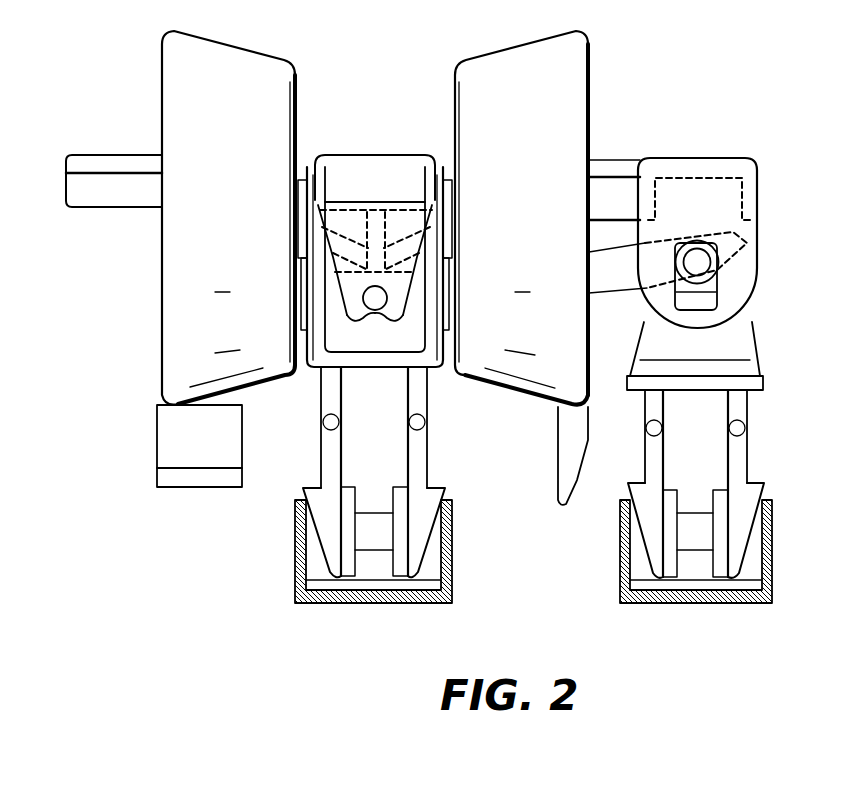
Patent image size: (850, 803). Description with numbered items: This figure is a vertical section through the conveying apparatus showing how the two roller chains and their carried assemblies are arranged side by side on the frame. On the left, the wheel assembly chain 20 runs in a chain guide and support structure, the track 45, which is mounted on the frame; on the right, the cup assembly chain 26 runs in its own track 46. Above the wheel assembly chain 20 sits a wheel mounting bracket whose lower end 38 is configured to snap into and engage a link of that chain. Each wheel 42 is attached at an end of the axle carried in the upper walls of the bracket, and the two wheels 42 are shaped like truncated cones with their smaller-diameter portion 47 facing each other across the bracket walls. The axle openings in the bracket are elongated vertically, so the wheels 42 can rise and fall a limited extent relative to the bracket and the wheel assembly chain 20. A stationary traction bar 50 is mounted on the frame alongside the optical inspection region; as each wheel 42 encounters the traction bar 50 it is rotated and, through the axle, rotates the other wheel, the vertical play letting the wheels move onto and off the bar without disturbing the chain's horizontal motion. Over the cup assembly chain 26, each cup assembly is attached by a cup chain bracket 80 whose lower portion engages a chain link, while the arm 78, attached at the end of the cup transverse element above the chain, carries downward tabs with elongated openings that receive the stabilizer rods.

The wheel assembly chain 20 is at (371, 517).
The cup assembly chain 26 is at (690, 525).
The lower end of the wheel mounting bracket 38 is at (320, 395).
The wheel 42 is at (232, 43).
The chain guide and support structure (track) for wheel assembly chain 45 is at (368, 603).
The chain guide and support structure (track) for cup assembly chain 46 is at (707, 603).
The smaller-diameter portion of the wheel 47 is at (298, 87).
The traction bar 50 is at (163, 420).
The arm 78 is at (682, 158).
The cup chain bracket 80 is at (755, 332).